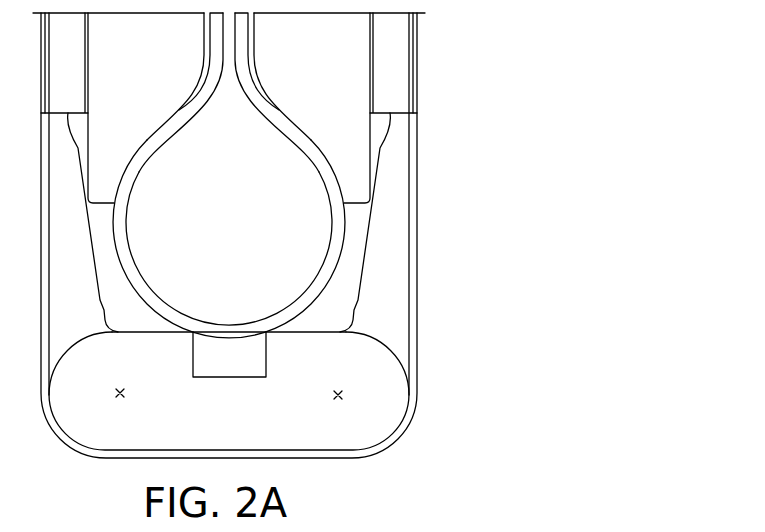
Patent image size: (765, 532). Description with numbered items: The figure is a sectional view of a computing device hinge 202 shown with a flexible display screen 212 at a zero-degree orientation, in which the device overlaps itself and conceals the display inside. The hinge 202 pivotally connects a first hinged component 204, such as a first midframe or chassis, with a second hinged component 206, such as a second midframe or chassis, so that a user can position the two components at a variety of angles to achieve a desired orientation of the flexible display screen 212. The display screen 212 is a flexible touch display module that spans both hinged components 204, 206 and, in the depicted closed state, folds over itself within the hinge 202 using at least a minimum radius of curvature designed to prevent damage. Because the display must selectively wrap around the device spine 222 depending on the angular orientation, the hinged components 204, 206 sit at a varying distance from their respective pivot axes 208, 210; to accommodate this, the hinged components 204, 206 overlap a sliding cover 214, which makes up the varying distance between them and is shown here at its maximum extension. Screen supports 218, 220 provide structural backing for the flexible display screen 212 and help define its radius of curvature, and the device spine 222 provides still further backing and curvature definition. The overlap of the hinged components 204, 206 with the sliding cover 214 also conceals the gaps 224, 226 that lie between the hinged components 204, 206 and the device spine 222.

The hinge 202 is at (520, 147).
The first hinged component 204 is at (62, 65).
The second hinged component 206 is at (390, 63).
The pivot axis 208 is at (123, 391).
The pivot axis 210 is at (337, 391).
The flexible display screen 212 is at (138, 289).
The sliding cover 214 is at (410, 250).
The screen support 218 is at (158, 98).
The screen support 220 is at (344, 98).
The device spine 222 is at (250, 426).
The gap 224 is at (95, 331).
The gap 226 is at (404, 331).